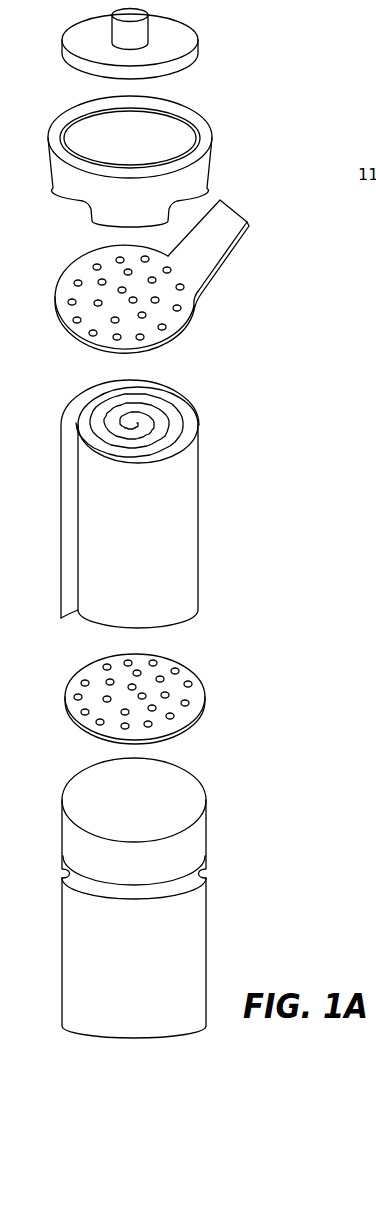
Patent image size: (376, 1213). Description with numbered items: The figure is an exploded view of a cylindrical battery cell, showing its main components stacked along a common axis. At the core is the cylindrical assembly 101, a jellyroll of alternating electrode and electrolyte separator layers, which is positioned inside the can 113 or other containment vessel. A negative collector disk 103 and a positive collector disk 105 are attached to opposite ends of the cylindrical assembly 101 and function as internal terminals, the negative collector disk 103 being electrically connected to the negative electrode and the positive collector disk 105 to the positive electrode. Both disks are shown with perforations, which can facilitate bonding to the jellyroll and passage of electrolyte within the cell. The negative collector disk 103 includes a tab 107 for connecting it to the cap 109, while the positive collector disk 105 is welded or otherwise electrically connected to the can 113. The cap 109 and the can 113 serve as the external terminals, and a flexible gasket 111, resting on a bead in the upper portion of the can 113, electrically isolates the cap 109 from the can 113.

The cylindrical assembly 101 is at (232, 430).
The negative collector disk 103 is at (254, 263).
The positive collector disk 105 is at (229, 670).
The tab 107 is at (232, 209).
The cap 109 is at (221, 36).
The flexible gasket 111 is at (236, 118).
The can 113 is at (236, 808).